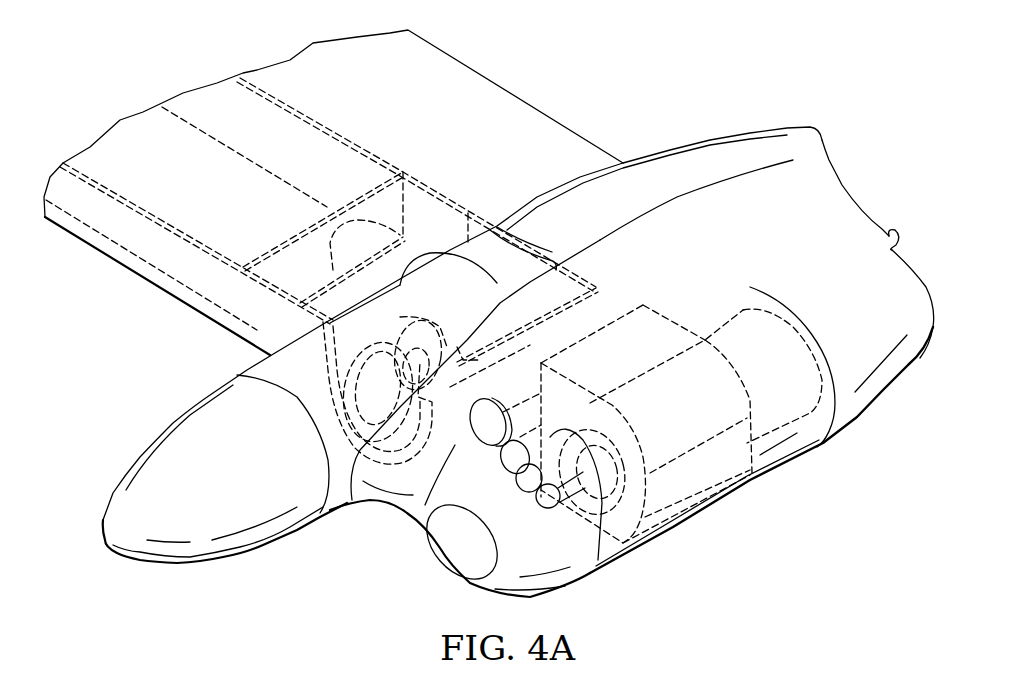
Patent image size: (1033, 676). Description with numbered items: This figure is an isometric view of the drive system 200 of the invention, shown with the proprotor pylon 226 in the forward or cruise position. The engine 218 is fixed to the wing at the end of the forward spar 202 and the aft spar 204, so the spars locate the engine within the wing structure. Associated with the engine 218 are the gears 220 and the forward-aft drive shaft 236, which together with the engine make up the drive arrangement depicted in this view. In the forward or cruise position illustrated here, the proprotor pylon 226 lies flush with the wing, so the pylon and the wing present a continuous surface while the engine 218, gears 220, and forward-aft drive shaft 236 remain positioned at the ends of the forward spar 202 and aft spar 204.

The drive system 200 is at (638, 71).
The forward spar 202 is at (170, 253).
The aft spar 204 is at (337, 168).
The engine 218 is at (728, 324).
The gears 220 is at (508, 500).
The proprotor pylon 226 is at (271, 568).
The forward-aft drive shaft 236 is at (568, 414).